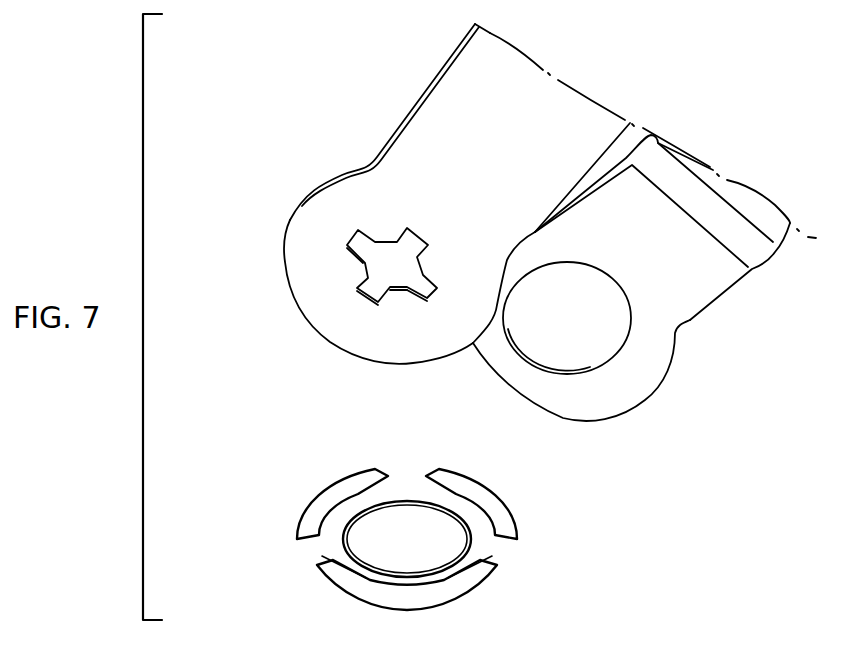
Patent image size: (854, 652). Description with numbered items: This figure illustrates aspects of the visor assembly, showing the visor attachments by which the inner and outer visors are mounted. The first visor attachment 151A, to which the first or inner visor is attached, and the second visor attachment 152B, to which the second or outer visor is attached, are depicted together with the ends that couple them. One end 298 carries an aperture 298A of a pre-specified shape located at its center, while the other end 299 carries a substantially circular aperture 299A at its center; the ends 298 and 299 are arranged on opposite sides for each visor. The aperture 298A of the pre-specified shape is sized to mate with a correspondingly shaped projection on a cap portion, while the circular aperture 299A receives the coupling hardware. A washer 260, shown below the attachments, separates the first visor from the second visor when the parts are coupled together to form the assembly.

The first visor attachment 151A is at (702, 342).
The second visor attachment 152B is at (351, 150).
The end 298 is at (287, 257).
The aperture 298A is at (380, 271).
The end 299 is at (670, 363).
The substantially circular aperture 299A is at (590, 357).
The washer 260 is at (480, 575).